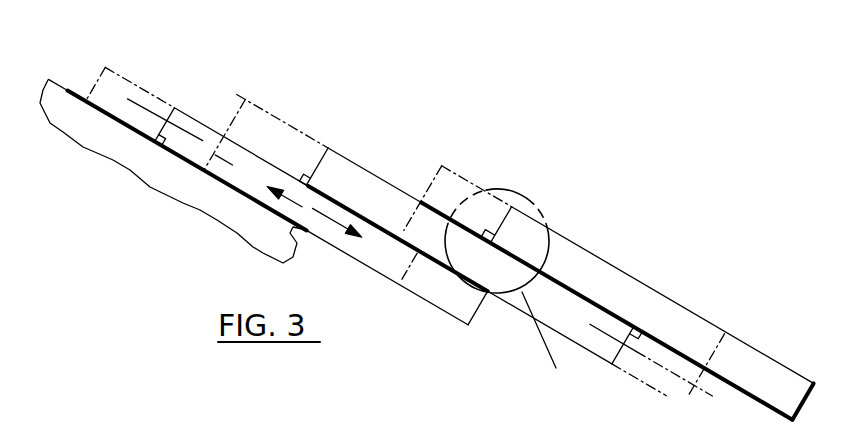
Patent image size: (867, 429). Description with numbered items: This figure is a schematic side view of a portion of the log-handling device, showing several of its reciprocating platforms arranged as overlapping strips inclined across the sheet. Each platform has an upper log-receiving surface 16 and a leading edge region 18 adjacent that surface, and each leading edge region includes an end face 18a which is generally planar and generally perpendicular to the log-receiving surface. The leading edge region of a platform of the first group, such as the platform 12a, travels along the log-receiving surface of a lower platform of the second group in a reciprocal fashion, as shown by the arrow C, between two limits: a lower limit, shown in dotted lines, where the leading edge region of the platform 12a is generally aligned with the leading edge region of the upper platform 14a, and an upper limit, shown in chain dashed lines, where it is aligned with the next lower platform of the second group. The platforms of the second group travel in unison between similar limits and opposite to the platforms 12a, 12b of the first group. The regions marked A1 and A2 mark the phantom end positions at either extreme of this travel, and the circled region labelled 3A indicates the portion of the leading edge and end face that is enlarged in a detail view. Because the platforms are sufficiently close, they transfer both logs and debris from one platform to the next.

The platform 12b is at (67, 91).
The platform 12a is at (340, 165).
The upper platform 14a is at (207, 122).
The upper log-receiving surface 16 is at (393, 183).
The leading edge region 18 is at (490, 214).
The end face 18a is at (513, 203).
The first attachment region A1 is at (138, 112).
The second attachment region A2 is at (673, 381).
The arrow C is at (310, 232).
The detail view region 3A is at (510, 295).